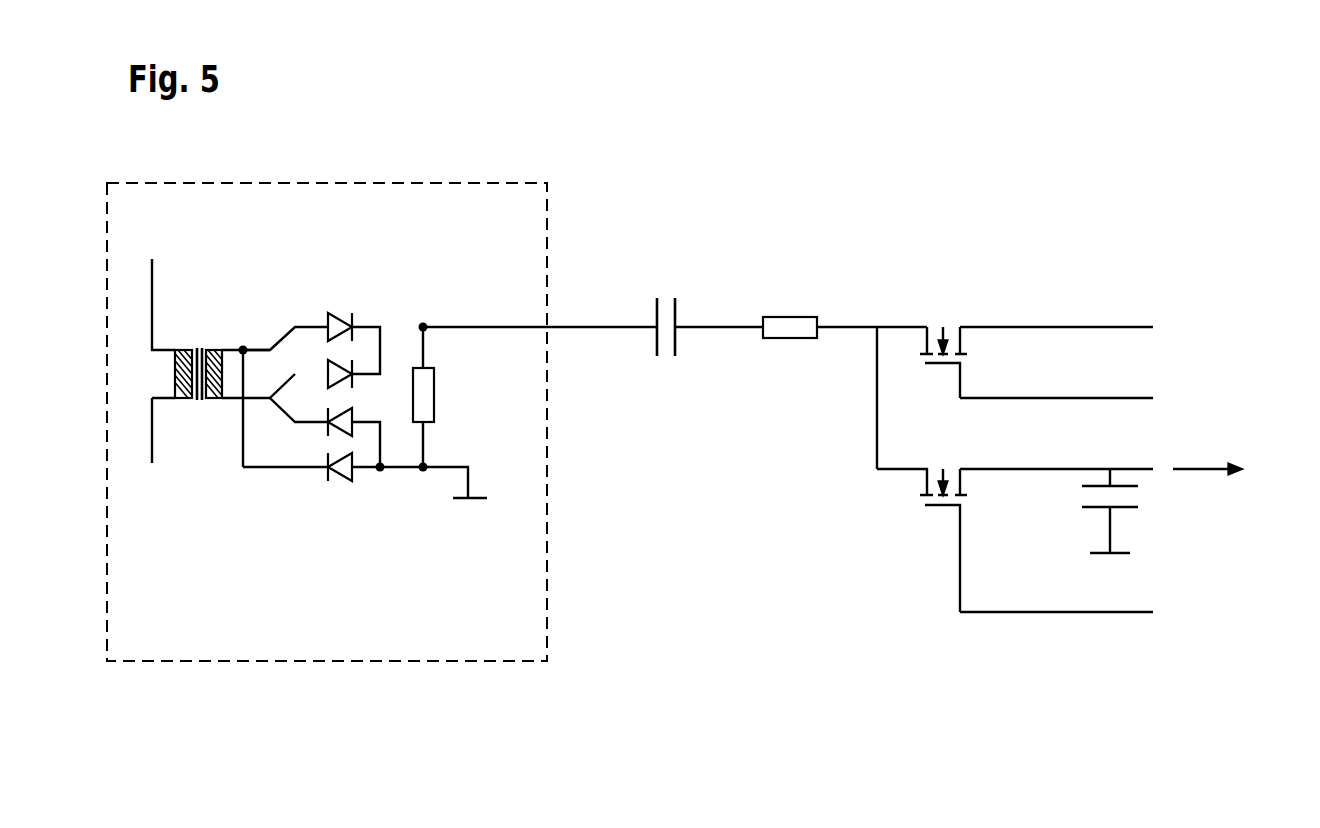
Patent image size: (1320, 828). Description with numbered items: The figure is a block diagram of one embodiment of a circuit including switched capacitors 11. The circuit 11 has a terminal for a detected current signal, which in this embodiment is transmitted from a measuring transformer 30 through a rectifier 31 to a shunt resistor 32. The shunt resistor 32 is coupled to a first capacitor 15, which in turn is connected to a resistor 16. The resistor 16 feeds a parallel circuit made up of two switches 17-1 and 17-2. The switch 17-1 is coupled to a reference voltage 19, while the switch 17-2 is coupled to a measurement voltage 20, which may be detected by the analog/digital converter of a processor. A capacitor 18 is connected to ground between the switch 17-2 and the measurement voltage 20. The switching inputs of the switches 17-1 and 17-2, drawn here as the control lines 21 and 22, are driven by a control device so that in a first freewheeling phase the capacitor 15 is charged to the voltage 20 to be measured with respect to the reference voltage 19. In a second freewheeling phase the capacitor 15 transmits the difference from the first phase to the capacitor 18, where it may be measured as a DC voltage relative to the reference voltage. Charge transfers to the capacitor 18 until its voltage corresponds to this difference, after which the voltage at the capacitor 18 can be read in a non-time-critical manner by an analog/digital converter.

The circuit including switched capacitors 11 is at (872, 178).
The first capacitor 15 is at (657, 310).
The resistor 16 is at (790, 327).
The switch 17-1 is at (955, 327).
The switch 17-2 is at (933, 508).
The capacitor 18 is at (1137, 500).
The reference voltage 19 is at (1122, 327).
The measurement voltage 20 is at (1143, 469).
The first control terminal 21 is at (1143, 398).
The second control terminal 22 is at (1143, 612).
The measuring transformer 30 is at (189, 350).
The rectifier 31 is at (293, 287).
The shunt resistor 32 is at (434, 399).